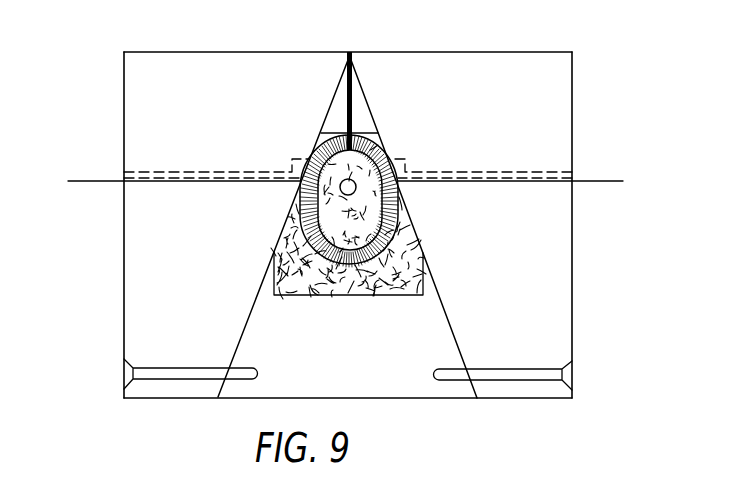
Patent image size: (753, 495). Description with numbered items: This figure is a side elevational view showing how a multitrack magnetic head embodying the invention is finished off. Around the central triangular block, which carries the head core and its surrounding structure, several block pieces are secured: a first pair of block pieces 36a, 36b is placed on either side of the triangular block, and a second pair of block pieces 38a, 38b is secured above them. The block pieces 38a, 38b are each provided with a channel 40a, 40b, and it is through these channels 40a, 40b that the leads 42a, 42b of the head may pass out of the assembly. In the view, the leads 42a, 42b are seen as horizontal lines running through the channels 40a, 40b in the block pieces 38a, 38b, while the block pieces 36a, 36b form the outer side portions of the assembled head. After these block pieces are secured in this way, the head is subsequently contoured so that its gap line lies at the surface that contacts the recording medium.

The block piece 36a is at (124, 268).
The block piece 36b is at (567, 285).
The block piece 38a is at (239, 88).
The block piece 38b is at (505, 95).
The channel 40a is at (151, 172).
The channel 40b is at (478, 172).
The lead 42a is at (87, 180).
The lead 42b is at (613, 181).